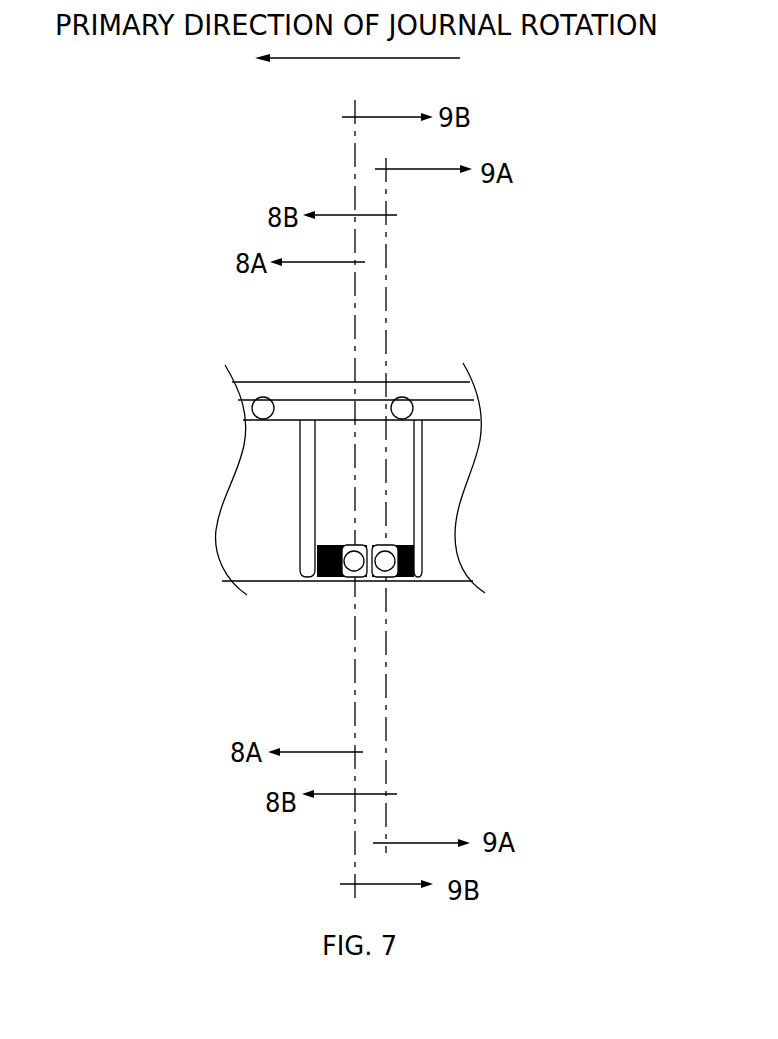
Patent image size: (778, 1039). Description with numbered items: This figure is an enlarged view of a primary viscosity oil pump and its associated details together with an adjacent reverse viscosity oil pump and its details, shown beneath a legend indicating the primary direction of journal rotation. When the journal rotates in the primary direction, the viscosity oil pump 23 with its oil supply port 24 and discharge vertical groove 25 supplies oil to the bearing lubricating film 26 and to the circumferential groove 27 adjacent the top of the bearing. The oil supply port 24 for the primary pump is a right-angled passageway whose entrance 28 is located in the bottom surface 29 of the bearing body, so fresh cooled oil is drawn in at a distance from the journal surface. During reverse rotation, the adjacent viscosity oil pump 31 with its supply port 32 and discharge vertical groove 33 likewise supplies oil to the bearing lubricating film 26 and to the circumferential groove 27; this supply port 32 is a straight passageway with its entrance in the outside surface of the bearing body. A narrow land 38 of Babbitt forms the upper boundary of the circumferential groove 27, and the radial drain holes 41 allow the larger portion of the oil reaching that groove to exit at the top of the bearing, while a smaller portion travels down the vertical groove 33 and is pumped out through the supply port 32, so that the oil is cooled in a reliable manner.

The viscosity oil pump 23 is at (317, 578).
The oil supply port 24 is at (348, 579).
The discharge vertical groove 25 is at (298, 518).
The bearing lubricating film 26 is at (263, 456).
The circumferential groove 27 is at (245, 415).
The entrance 28 is at (354, 582).
The bottom surface 29 is at (470, 585).
The viscosity oil pump 31 is at (408, 576).
The supply port 32 is at (389, 578).
The discharge vertical groove 33 is at (423, 462).
The narrow land 38 is at (272, 388).
The radial drain hole 41 is at (405, 398).